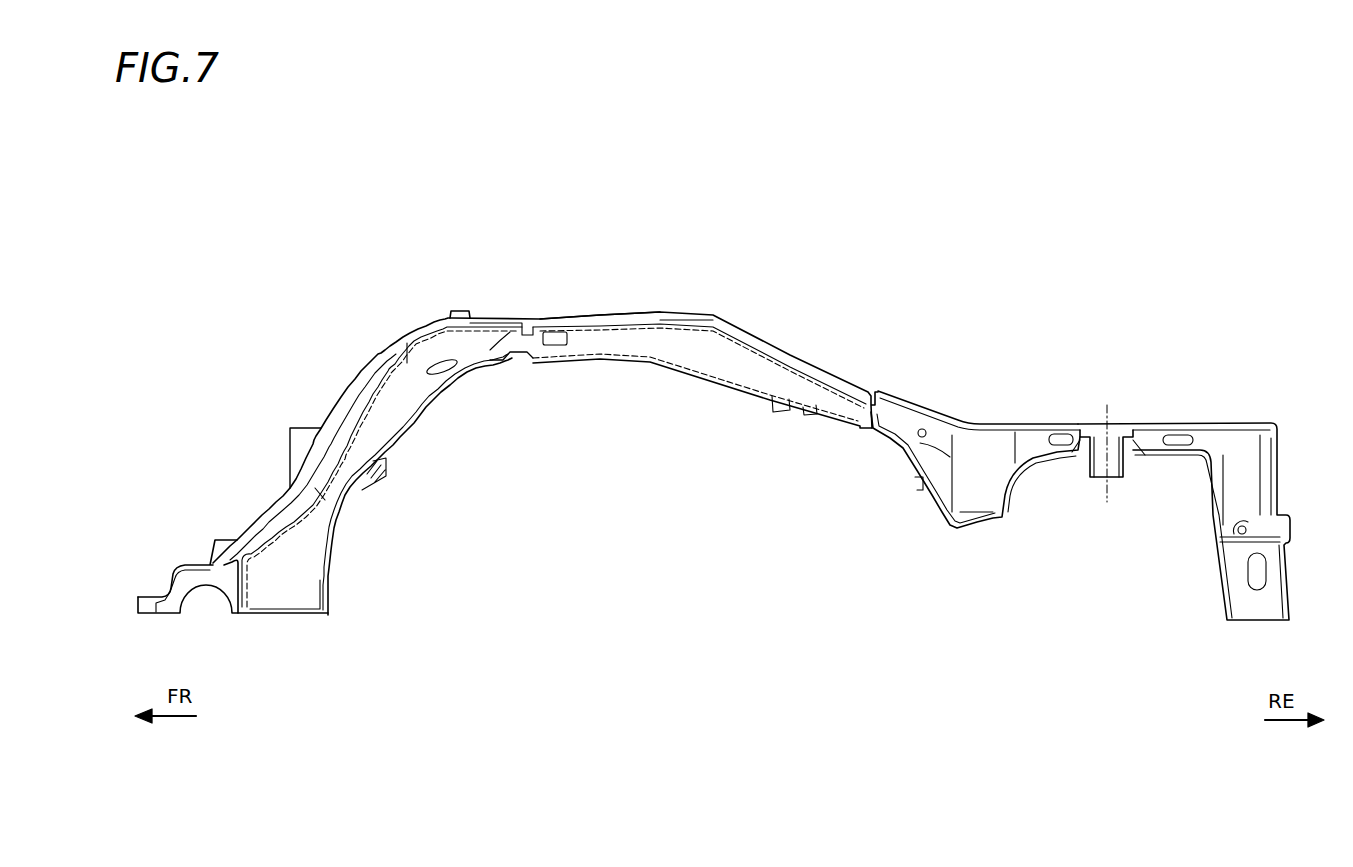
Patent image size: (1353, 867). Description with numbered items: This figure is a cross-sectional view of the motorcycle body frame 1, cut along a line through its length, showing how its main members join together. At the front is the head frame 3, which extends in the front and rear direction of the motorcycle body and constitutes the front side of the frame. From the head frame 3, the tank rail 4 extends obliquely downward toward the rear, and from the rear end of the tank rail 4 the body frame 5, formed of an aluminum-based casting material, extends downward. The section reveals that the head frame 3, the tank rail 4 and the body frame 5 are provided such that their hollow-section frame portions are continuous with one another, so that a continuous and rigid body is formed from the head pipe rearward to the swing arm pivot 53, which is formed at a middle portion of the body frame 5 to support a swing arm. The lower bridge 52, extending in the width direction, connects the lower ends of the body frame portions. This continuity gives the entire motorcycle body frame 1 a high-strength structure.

The motorcycle body frame 1 is at (1003, 191).
The head frame 3 is at (410, 430).
The tank rails 4 is at (704, 373).
The body frames 5 is at (937, 510).
The swing arm pivots 53 is at (1133, 465).
The lower bridge 52 is at (1288, 578).